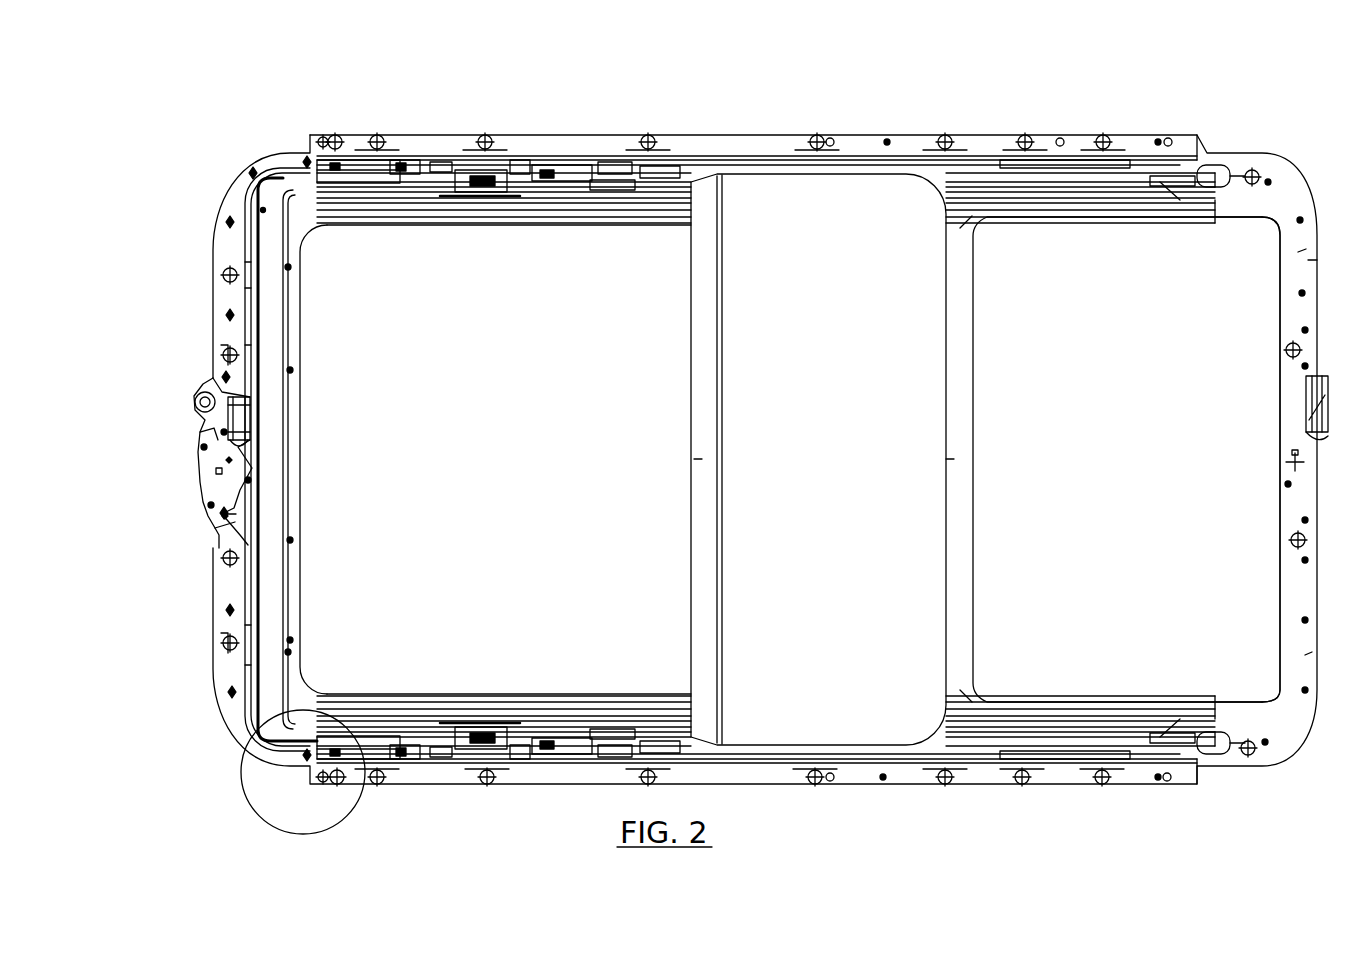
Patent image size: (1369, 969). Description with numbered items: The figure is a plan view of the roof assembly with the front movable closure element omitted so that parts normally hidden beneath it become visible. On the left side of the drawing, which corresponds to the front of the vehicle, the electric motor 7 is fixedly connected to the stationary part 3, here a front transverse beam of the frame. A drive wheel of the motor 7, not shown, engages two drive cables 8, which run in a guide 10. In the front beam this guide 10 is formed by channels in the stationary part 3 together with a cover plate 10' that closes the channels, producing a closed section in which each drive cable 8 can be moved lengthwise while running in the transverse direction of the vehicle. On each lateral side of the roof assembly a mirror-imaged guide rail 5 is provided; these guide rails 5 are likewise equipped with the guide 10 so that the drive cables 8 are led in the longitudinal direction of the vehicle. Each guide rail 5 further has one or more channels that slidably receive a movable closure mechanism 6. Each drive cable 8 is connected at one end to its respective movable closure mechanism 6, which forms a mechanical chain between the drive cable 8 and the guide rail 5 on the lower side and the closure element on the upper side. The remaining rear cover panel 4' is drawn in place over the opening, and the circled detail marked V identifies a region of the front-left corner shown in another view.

The stationary part 3 is at (210, 463).
The sliding cover panel 4' is at (844, 396).
The guide rail 5 is at (676, 178).
The movable closure mechanism 6 is at (505, 160).
The electric motor 7 is at (235, 413).
The drive cable 8 is at (540, 185).
The guide 10 is at (727, 448).
The cover plate 10' is at (231, 459).
The section line V is at (245, 793).